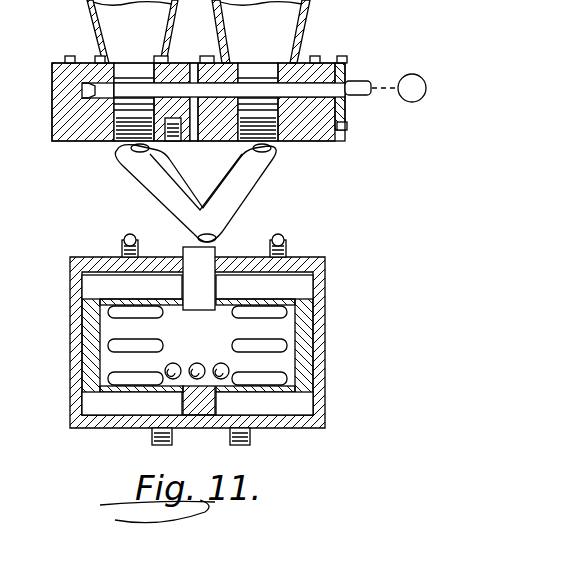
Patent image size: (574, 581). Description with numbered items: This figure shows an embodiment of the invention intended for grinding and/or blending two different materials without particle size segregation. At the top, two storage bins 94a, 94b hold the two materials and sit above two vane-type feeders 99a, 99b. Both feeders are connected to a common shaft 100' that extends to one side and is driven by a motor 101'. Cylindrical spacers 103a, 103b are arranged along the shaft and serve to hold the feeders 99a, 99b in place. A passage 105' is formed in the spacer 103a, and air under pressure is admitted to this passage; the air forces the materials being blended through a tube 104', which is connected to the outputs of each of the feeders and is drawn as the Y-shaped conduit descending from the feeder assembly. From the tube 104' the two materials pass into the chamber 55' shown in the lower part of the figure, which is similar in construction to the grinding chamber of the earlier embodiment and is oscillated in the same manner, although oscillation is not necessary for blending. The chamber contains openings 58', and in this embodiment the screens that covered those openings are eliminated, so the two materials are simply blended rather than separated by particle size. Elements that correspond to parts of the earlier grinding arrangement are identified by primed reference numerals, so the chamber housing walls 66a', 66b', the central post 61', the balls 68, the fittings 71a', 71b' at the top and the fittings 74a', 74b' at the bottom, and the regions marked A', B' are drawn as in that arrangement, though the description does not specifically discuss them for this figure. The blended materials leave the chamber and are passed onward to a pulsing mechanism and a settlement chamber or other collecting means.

The storage bin 94a is at (88, 16).
The storage bin 94b is at (308, 13).
The vane-type feeder 99a is at (133, 72).
The vane-type feeder 99b is at (260, 72).
The common shaft 100' is at (259, 68).
The motor 101' is at (433, 78).
The cylindrical spacer 103a is at (187, 142).
The cylindrical spacer 103b is at (302, 142).
The tube 104' is at (213, 193).
The passage 105' is at (196, 182).
The inlet fitting 71a' is at (119, 229).
The inlet fitting 71b' is at (280, 232).
The chamber A' is at (84, 252).
The chamber B' is at (311, 253).
The central post 61' is at (181, 272).
The housing wall 66a' is at (170, 342).
The housing wall 66b' is at (227, 356).
The openings 58' is at (197, 345).
The chamber 55' is at (199, 369).
The balls 68 is at (180, 362).
The outlet fitting 74a' is at (138, 446).
The outlet fitting 74b' is at (265, 446).